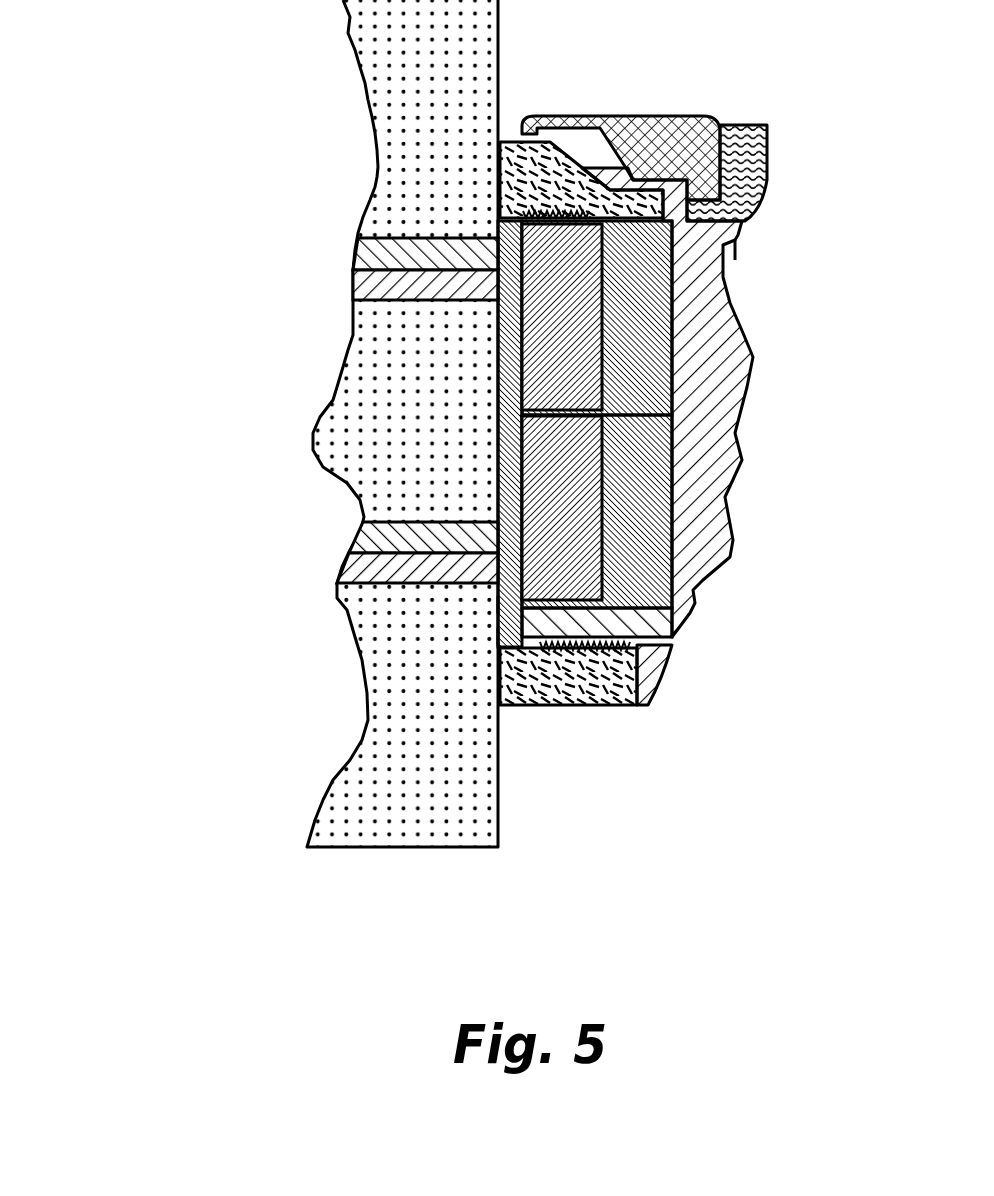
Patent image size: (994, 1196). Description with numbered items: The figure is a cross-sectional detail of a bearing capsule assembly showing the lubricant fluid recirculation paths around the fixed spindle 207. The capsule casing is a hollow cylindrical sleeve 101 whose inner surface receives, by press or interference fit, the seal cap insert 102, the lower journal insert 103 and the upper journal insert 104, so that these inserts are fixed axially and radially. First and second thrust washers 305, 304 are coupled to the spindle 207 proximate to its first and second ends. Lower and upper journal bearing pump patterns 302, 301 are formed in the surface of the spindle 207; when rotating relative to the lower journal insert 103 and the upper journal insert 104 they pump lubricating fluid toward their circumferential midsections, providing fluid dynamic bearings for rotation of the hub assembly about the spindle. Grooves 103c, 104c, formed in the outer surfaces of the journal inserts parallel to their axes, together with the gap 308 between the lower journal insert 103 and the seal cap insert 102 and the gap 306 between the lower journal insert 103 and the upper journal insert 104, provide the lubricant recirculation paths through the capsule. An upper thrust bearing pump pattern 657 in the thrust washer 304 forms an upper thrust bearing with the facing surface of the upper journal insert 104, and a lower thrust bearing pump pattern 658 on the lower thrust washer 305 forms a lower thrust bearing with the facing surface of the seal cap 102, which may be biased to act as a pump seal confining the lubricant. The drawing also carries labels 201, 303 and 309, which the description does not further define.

The hollow cylindrical sleeve 101 is at (712, 340).
The seal cap insert 102 is at (673, 613).
The lower journal insert 103 is at (563, 483).
The groove of lower journal insert 103c is at (657, 517).
The upper journal insert 104 is at (567, 282).
The groove of upper journal insert 104c is at (663, 292).
The seal member 201 is at (758, 125).
The fixed spindle 207 is at (403, 78).
The upper journal bearing pump pattern 301 is at (345, 293).
The lower journal bearing pump pattern 302 is at (320, 583).
The retaining cap 303 is at (668, 130).
The second thrust washer 304 is at (553, 153).
The first thrust washer 305 is at (647, 660).
The gap between lower journal insert and upper journal insert 306 is at (490, 418).
The gap between lower journal insert and seal cap insert 308 is at (498, 610).
The lower contact surface 309 is at (498, 642).
The upper thrust bearing pump pattern 657 is at (520, 207).
The lower thrust bearing pump pattern 658 is at (640, 648).